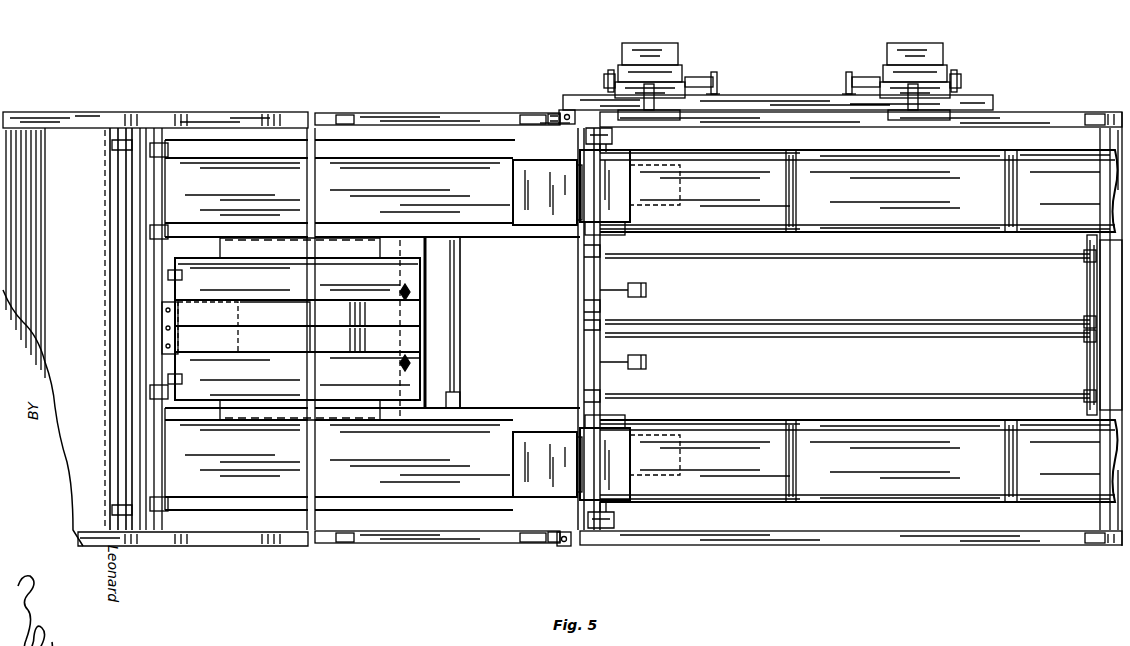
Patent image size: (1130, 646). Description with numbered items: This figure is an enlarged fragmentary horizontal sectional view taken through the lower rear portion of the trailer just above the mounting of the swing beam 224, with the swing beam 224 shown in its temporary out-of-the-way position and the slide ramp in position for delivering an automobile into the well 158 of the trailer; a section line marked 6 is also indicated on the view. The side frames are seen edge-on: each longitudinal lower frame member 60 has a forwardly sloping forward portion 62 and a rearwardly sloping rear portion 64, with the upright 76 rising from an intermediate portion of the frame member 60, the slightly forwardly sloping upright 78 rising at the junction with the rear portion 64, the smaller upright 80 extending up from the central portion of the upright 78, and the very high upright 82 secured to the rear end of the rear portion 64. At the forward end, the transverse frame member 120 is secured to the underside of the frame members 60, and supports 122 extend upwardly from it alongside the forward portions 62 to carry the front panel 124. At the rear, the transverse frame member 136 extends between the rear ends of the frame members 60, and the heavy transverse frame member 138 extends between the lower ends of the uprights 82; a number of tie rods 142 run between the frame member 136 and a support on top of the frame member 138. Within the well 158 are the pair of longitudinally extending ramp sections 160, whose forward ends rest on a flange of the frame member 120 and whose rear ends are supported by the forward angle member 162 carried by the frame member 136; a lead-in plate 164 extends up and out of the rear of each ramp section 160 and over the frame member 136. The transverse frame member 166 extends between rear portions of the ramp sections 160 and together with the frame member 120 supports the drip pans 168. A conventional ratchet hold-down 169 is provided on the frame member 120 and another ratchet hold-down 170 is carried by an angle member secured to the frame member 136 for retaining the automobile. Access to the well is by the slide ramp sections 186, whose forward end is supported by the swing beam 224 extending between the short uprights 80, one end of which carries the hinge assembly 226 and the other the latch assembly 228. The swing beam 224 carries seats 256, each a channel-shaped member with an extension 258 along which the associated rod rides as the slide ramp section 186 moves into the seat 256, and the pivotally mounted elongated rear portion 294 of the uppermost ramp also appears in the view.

The section line 6- 6 is at (564, 406).
The longitudinal lower frame member 60 is at (248, 112).
The forward portion 62 is at (88, 112).
The rear portion 64 is at (1056, 98).
The upright 76 is at (352, 113).
The upright 78 is at (530, 128).
The upright 80 is at (556, 116).
The upright 82 is at (1096, 112).
The transverse frame member 120 is at (152, 126).
The supports 122 is at (35, 128).
The front panel 124 is at (44, 378).
The transverse frame member 136 is at (584, 327).
The heavy transverse frame member 138 is at (1086, 354).
The tie rods 142 is at (884, 254).
The lower central well 158 is at (470, 324).
The ramp sections 160 is at (412, 136).
The forward angle member 162 is at (574, 244).
The lead-in plate 164 is at (514, 188).
The transverse frame member 166 is at (432, 330).
The drip pans 168 is at (292, 346).
The ratchet hold-down 169 is at (112, 232).
The ratchet hold-down 170 is at (602, 278).
The slide ramp section 186 is at (790, 226).
The swing beam 224 is at (768, 92).
The hinge assembly 226 is at (563, 100).
The latch assembly 228 is at (567, 552).
The seat 256 is at (620, 70).
The extension 258 is at (670, 36).
The rear portion 294 is at (740, 62).